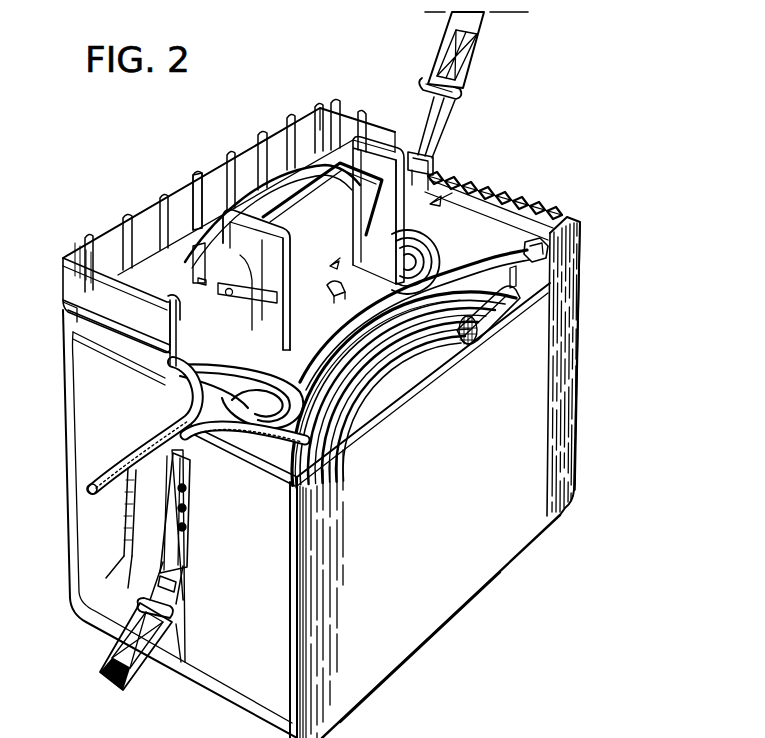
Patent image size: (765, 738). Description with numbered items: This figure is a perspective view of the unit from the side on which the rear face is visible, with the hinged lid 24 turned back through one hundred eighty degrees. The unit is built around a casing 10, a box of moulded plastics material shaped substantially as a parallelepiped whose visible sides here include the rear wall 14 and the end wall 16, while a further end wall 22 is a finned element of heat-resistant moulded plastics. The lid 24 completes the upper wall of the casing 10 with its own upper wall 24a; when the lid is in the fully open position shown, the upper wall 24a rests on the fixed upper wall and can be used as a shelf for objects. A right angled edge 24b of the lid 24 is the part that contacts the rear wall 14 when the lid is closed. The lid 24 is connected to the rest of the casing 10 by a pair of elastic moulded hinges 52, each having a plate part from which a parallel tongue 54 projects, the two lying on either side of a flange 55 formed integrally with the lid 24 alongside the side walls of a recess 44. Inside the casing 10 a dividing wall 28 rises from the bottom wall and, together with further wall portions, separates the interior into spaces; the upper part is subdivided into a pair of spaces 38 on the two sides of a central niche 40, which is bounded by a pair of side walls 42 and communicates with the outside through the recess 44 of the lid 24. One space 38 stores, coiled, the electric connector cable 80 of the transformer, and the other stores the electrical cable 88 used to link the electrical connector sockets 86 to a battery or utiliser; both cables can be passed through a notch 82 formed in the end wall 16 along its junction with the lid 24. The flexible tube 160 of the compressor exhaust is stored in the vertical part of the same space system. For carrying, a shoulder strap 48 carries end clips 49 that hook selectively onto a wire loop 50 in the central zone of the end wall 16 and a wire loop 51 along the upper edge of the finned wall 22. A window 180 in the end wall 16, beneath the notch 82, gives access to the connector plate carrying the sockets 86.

The casing 10 is at (530, 551).
The rear wall 14 is at (430, 600).
The end wall 16 is at (188, 630).
The further end wall 22 is at (588, 222).
The hinged lid 24 is at (349, 110).
The upper wall of the lid 24a is at (164, 262).
The right angled edge 24b is at (215, 183).
The dividing wall 28 is at (308, 356).
The spaces 38 is at (462, 188).
The central niche 40 is at (350, 236).
The side walls 42 is at (412, 374).
The recess 44 is at (305, 222).
The shoulder strap 48 is at (470, 22).
The end clips 49 is at (442, 120).
The loop 50 is at (190, 532).
The loop 51 is at (436, 165).
The hinges 52 is at (375, 160).
The tongue 54 is at (264, 428).
The flange 55 is at (198, 243).
The electric connector cable 80 is at (126, 494).
The notch 82 is at (184, 442).
The electrical connector sockets 86 is at (190, 514).
The electrical cable 88 is at (448, 240).
The flexible tube 160 is at (397, 392).
The window 180 is at (187, 567).